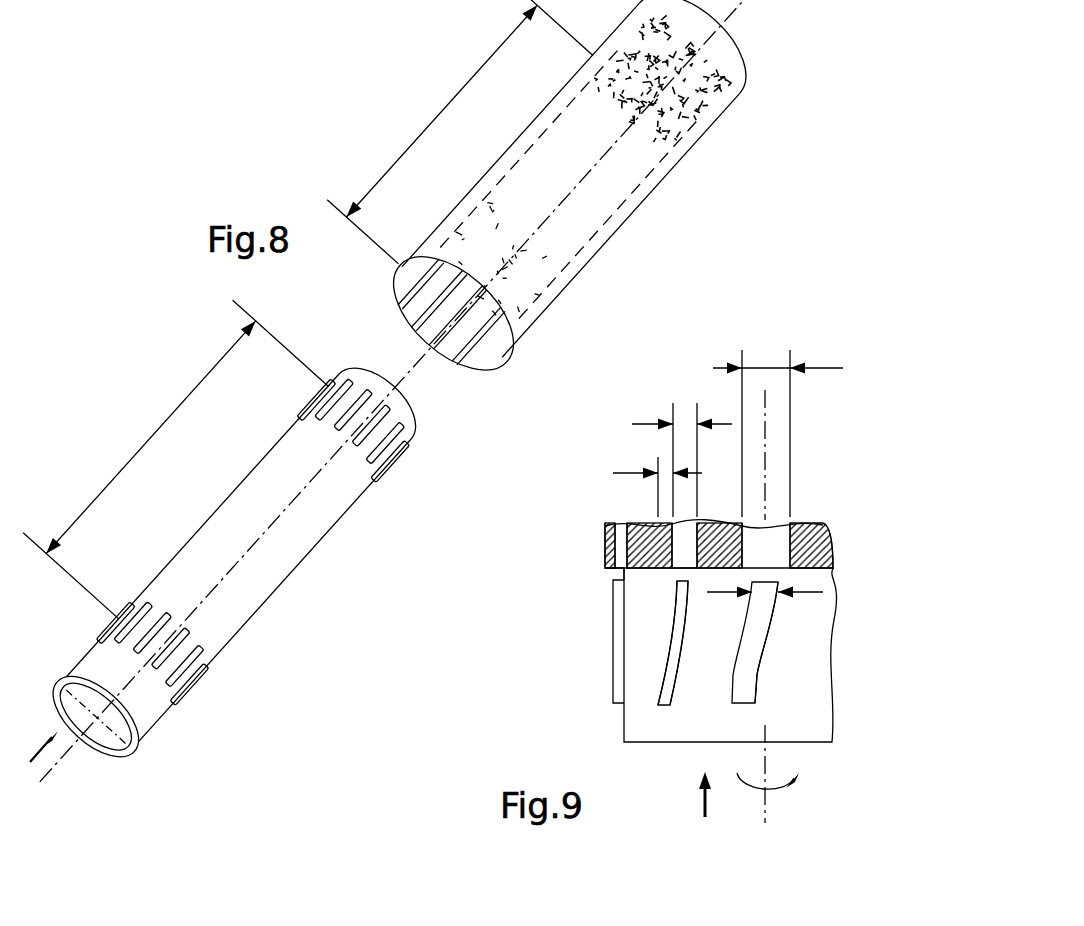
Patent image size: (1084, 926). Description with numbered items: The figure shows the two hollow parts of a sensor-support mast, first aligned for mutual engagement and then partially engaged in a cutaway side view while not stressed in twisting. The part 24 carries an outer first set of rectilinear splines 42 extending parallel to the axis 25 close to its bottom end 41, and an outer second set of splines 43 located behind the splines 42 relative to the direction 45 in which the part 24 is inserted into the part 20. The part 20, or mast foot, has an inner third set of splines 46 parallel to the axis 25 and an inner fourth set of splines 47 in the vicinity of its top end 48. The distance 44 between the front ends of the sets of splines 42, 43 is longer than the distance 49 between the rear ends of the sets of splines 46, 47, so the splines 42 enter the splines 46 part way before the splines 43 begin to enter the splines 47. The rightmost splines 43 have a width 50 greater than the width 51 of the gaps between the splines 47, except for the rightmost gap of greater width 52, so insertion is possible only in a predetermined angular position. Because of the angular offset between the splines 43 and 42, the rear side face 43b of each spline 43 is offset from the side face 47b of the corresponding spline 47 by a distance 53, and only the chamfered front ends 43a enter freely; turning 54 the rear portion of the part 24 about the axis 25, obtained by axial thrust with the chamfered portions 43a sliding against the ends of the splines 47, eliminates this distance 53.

In FIG. 8, the part 20 is at (642, 208).
In FIG. 9, the part 20 is at (833, 527).
In FIG. 8, the part 24 is at (292, 566).
In FIG. 9, the part 24 is at (815, 717).
In FIG. 8, the axis 25 is at (58, 757).
In FIG. 9, the axis 25 is at (766, 427).
In FIG. 8, the bottom end 41 is at (425, 422).
In FIG. 8, the first set of rectilinear splines 42 is at (327, 396).
In FIG. 8, the second set of splines 43 is at (103, 623).
In FIG. 9, the second set of splines 43 is at (610, 702).
In FIG. 9, the chamfered front ends 43a is at (673, 600).
In FIG. 9, the rear side face 43b is at (646, 679).
In FIG. 8, the distance 44 is at (155, 432).
In FIG. 8, the direction 45 is at (32, 758).
In FIG. 9, the direction 45 is at (703, 806).
In FIG. 8, the third set of rectilinear splines 46 is at (631, 42).
In FIG. 8, the fourth set of rectilinear splines 47 is at (418, 312).
In FIG. 9, the fourth set of rectilinear splines 47 is at (618, 524).
In FIG. 9, the side face 47b is at (691, 563).
In FIG. 8, the top end 48 is at (394, 301).
In FIG. 9, the top end 48 is at (604, 580).
In FIG. 8, the distance 49 is at (430, 125).
In FIG. 9, the width 50 is at (823, 592).
In FIG. 9, the width 51 is at (683, 421).
In FIG. 9, the width 52 is at (760, 366).
In FIG. 9, the distance 53 is at (627, 468).
In FIG. 9, the twisting 54 is at (795, 772).